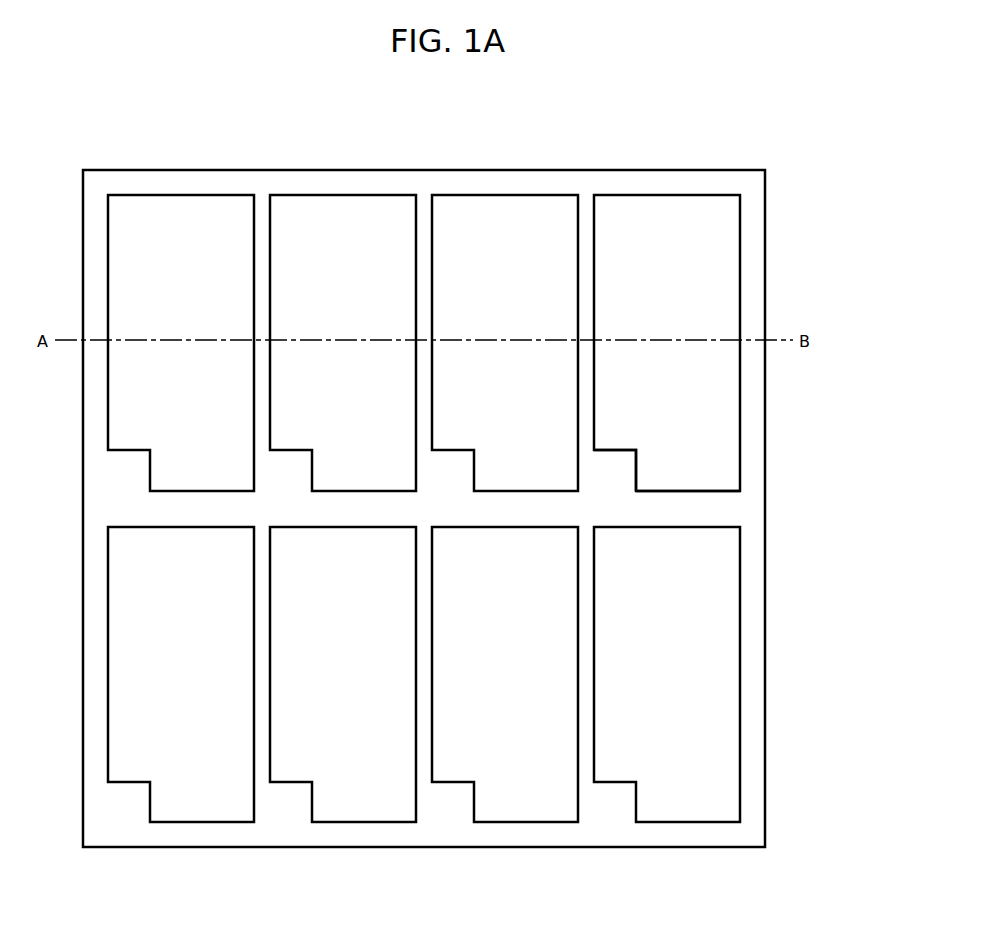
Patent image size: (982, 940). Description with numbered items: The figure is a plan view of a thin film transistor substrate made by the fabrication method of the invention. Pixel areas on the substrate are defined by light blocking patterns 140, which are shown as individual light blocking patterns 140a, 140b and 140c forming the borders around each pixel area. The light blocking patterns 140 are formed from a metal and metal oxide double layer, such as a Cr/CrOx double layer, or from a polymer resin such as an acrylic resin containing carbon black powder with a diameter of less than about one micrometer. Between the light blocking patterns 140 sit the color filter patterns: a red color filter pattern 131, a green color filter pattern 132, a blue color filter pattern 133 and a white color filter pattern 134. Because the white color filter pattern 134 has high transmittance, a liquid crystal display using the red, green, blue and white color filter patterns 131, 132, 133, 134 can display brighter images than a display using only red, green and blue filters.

The red color filter pattern 131 is at (688, 772).
The green color filter pattern 132 is at (525, 772).
The blue color filter pattern 133 is at (362, 772).
The white color filter pattern 134 is at (200, 772).
The light blocking patterns 140 is at (857, 413).
The light blocking pattern 140a is at (690, 491).
The light blocking pattern 140b is at (765, 413).
The light blocking pattern 140c is at (637, 460).